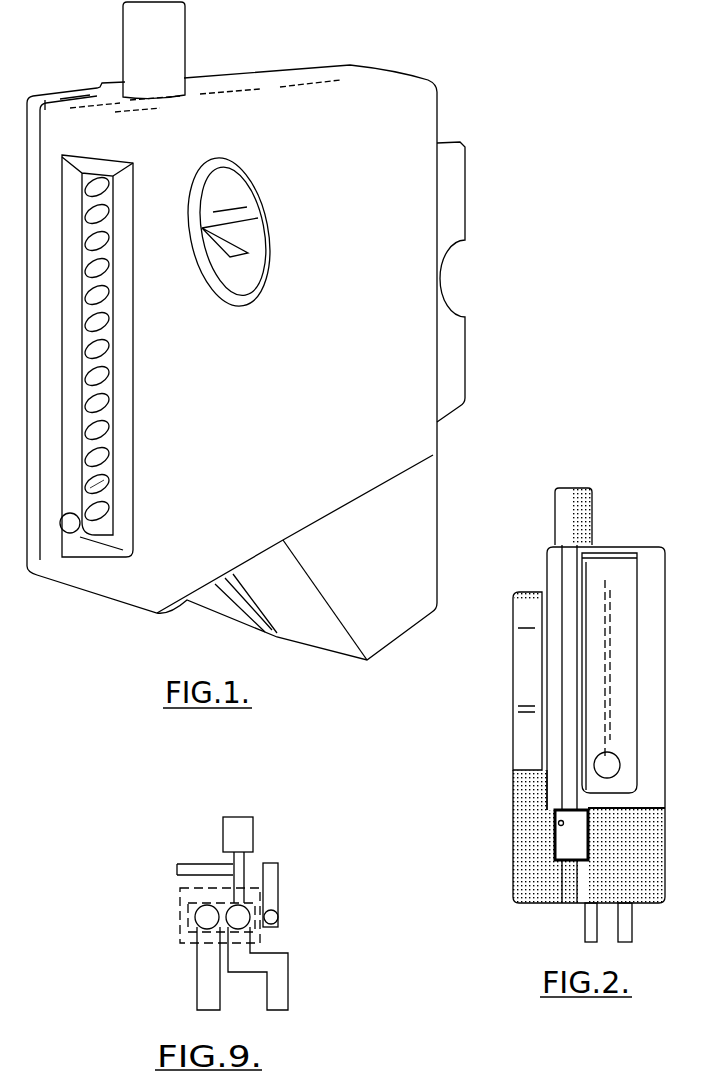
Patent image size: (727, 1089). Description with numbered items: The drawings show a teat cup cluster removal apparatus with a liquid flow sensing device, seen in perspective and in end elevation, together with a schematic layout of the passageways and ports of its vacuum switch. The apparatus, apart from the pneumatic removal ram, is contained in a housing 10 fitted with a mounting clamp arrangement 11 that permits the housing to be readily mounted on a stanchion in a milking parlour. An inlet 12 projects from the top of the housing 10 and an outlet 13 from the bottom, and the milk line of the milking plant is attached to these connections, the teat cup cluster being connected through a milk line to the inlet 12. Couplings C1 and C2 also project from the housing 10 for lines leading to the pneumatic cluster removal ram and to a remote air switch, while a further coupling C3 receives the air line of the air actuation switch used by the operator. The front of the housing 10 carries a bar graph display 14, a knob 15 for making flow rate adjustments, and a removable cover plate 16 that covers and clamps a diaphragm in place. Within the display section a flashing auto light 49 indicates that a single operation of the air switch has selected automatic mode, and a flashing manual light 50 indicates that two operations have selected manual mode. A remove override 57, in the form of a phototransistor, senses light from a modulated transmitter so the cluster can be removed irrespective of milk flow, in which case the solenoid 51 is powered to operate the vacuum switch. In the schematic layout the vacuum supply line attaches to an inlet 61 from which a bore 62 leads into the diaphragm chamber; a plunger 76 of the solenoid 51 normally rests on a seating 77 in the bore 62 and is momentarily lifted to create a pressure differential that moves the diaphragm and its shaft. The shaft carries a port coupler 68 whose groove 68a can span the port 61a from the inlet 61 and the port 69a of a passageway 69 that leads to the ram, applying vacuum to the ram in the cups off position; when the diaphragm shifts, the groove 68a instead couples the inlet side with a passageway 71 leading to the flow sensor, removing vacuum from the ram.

In FIG. 1, the housing 10 is at (118, 607).
In FIG. 2, the housing 10 is at (670, 838).
In FIG. 1, the mounting clamp arrangement 11 is at (473, 218).
In FIG. 1, the inlet 12 is at (163, 40).
In FIG. 2, the inlet 12 is at (572, 503).
In FIG. 2, the outlet 13 is at (560, 848).
In FIG. 1, the bar graph display 14 is at (118, 343).
In FIG. 2, the bar graph display 14 is at (630, 590).
In FIG. 1, the knob 15 is at (250, 200).
In FIG. 2, the removable cover plate 16 is at (522, 708).
In FIG. 1, the auto light 49 is at (103, 190).
In FIG. 1, the manual light 50 is at (100, 490).
In FIG. 1, the remove override 57 is at (100, 520).
In FIG. 2, the coupling C1 is at (585, 923).
In FIG. 2, the coupling C2 is at (632, 927).
In FIG. 2, the coupling C3 is at (560, 823).
In FIG. 9, the solenoid 51 is at (242, 825).
In FIG. 9, the inlet 61 is at (280, 980).
In FIG. 9, the port 61a is at (240, 918).
In FIG. 9, the bore 62 is at (177, 867).
In FIG. 9, the port coupler 68 is at (180, 938).
In FIG. 9, the groove 68a is at (180, 905).
In FIG. 9, the passageway 69 is at (207, 988).
In FIG. 9, the port 69a is at (197, 918).
In FIG. 9, the passageway 71 is at (272, 880).
In FIG. 9, the plunger 76 is at (242, 860).
In FIG. 9, the seating 77 is at (233, 870).